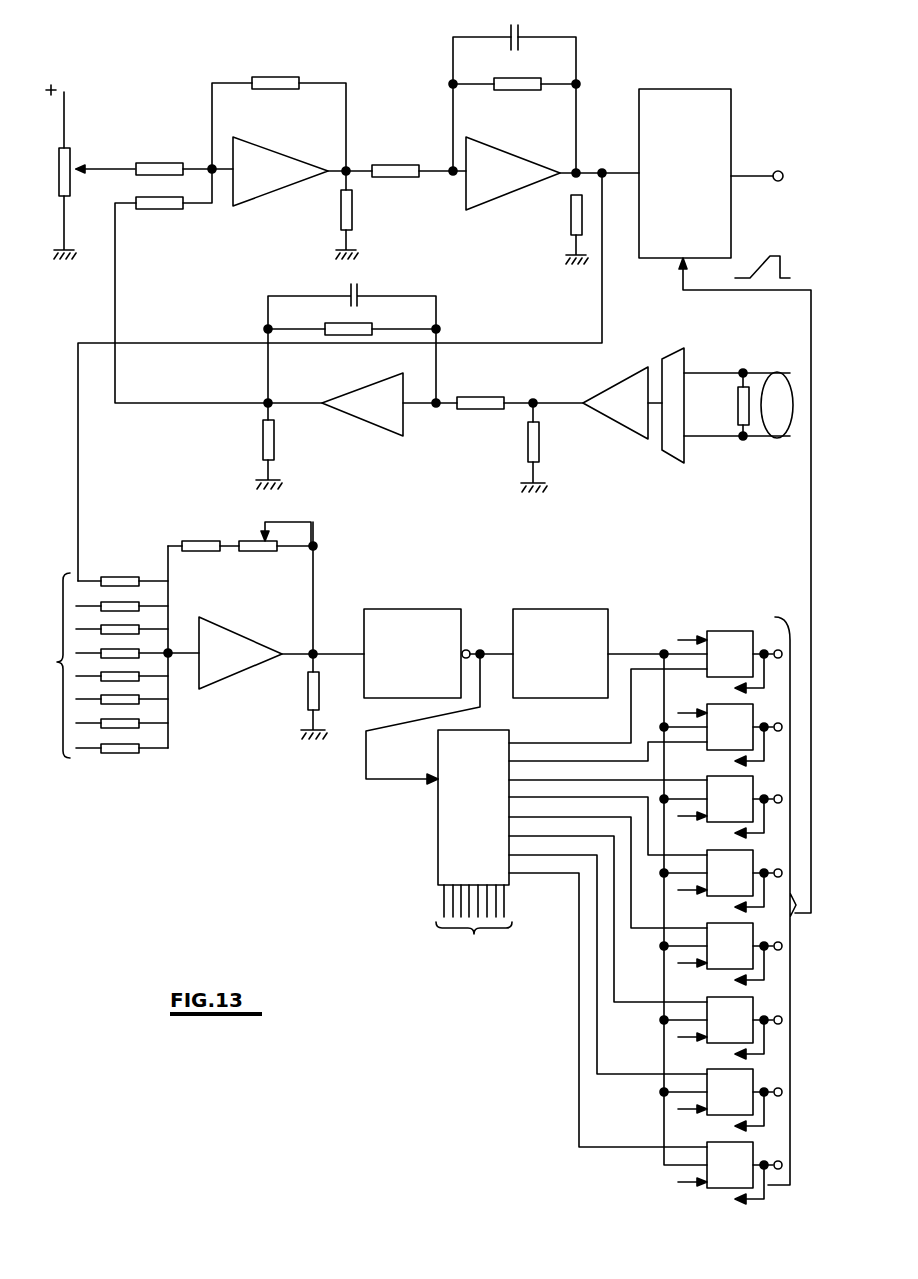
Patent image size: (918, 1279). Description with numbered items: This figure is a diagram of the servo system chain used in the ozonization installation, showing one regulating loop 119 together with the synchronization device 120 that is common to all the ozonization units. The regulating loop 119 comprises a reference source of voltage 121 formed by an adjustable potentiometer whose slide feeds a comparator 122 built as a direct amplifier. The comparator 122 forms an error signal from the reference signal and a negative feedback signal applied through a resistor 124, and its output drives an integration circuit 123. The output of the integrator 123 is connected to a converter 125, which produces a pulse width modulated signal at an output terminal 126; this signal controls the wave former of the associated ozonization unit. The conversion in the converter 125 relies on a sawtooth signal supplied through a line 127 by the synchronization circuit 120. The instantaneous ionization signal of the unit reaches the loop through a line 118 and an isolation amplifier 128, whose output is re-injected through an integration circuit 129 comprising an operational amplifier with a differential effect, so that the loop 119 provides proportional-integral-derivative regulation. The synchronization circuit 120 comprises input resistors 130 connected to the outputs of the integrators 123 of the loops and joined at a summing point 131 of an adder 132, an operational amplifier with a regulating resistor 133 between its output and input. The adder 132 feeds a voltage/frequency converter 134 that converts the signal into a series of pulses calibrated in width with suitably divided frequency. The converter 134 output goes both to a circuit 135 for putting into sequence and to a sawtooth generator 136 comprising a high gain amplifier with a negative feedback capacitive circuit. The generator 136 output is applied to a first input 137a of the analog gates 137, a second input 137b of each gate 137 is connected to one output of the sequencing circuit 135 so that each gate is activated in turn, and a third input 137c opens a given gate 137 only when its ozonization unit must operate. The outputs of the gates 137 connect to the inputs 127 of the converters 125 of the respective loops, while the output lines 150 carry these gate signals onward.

The line 118 is at (772, 442).
The regulating loop 119 is at (608, 72).
The synchronization device 120 is at (482, 608).
The reference source of voltage 121 is at (74, 152).
The comparator 122 is at (298, 190).
The integration circuit 123 is at (532, 215).
The resistor 124 is at (158, 210).
The converter 125 is at (680, 100).
The output terminal 126 is at (779, 171).
The line 127 is at (717, 291).
The isolation amplifier 128 is at (624, 441).
The integration circuit 129 is at (346, 425).
The input resistors 130 is at (122, 766).
The summing point 131 is at (172, 648).
The adder 132 is at (243, 681).
The regulating resistor 133 is at (252, 563).
The voltage/frequency converter 134 is at (393, 622).
The circuit for putting into sequence 135 is at (450, 852).
The sawtooth generator 136 is at (558, 622).
The analog gates 137 is at (736, 640).
The first input 137a is at (690, 670).
The second input 137b is at (627, 657).
The third input 137c is at (688, 638).
The output lines 150 is at (766, 682).